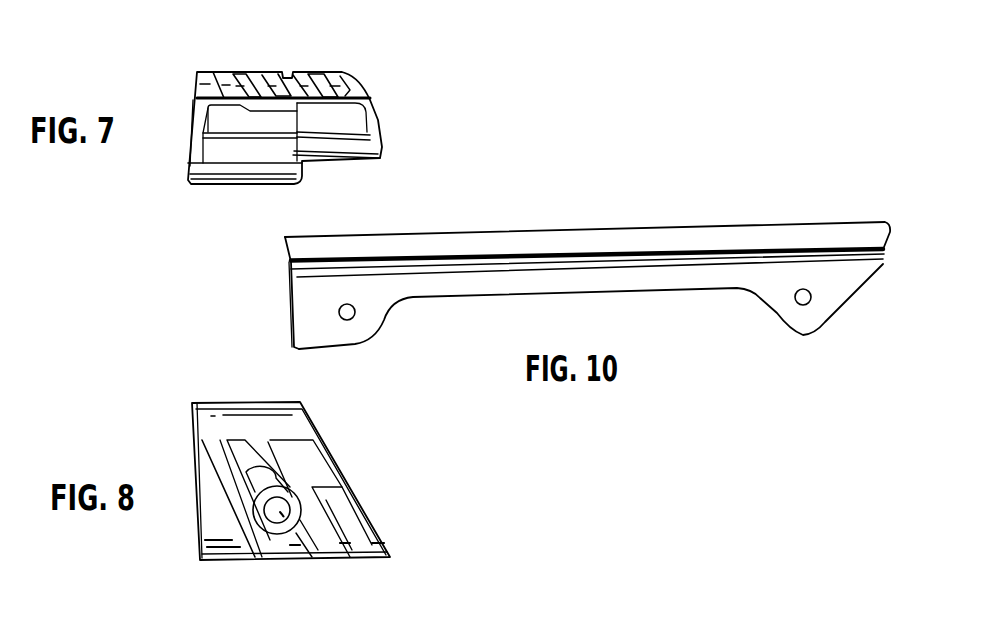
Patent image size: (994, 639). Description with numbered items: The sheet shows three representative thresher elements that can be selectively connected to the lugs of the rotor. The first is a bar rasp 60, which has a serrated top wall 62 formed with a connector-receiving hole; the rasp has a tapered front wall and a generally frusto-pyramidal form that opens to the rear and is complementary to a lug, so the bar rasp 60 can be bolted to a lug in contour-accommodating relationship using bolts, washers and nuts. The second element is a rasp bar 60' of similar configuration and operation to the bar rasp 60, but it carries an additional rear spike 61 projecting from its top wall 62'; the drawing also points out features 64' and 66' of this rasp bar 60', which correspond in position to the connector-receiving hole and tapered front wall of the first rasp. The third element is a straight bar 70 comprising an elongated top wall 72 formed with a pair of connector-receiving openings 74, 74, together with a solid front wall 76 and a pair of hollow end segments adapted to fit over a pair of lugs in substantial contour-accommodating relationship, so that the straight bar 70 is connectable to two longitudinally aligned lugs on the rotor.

In FIG. 7, the bar rasp 60 is at (235, 115).
In FIG. 7, the serrated top wall 62 is at (275, 62).
In FIG. 10, the straight bar 70 is at (503, 306).
In FIG. 10, the elongated top wall 72 is at (630, 285).
In FIG. 10, the connector-receiving openings 74 is at (352, 318).
In FIG. 10, the solid front wall 76 is at (638, 238).
In FIG. 8, the rasp bar 60' is at (233, 494).
In FIG. 8, the rear spike 61 is at (345, 512).
In FIG. 8, the top wall 62' is at (226, 530).
In FIG. 8, the boss 64' is at (282, 540).
In FIG. 8, the groove 66' is at (233, 391).